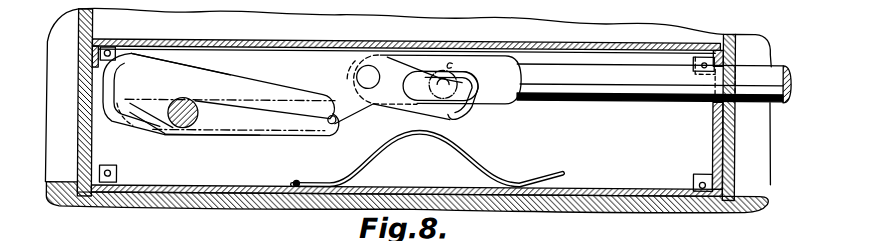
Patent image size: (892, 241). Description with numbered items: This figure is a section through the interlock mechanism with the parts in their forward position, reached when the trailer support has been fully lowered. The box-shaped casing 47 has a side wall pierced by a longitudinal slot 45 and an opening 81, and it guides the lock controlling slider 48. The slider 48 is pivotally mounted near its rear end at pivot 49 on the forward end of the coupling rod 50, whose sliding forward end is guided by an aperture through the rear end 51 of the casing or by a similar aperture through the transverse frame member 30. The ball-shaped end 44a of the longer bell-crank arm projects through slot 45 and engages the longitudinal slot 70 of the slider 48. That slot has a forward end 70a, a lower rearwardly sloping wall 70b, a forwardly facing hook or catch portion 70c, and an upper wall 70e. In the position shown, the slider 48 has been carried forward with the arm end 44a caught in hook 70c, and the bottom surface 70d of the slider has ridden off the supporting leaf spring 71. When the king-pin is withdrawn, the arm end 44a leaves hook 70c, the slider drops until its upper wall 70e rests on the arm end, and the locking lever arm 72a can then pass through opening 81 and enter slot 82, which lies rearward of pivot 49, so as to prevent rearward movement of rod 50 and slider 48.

The transverse frame member 30 is at (80, 85).
The ball-shaped end 44a is at (187, 98).
The longitudinal slot 45 is at (254, 97).
The box-shaped casing 47 is at (483, 47).
The lock controlling slider 48 is at (310, 76).
The slider pivot 49 is at (370, 63).
The coupling rod 50 is at (773, 70).
The rear end of box 51 is at (718, 132).
The longitudinal slot 70 is at (214, 88).
The forward end of slot 70a is at (121, 70).
The lower rearwardly sloping wall 70b is at (152, 112).
The hook or catch portion 70c is at (213, 128).
The bottom surface 70d is at (274, 140).
The upper wall of slot 70e is at (222, 78).
The leaf spring 71 is at (473, 161).
The locking lever arm 72a is at (472, 100).
The opening 81 is at (453, 62).
The slot 82 is at (447, 113).